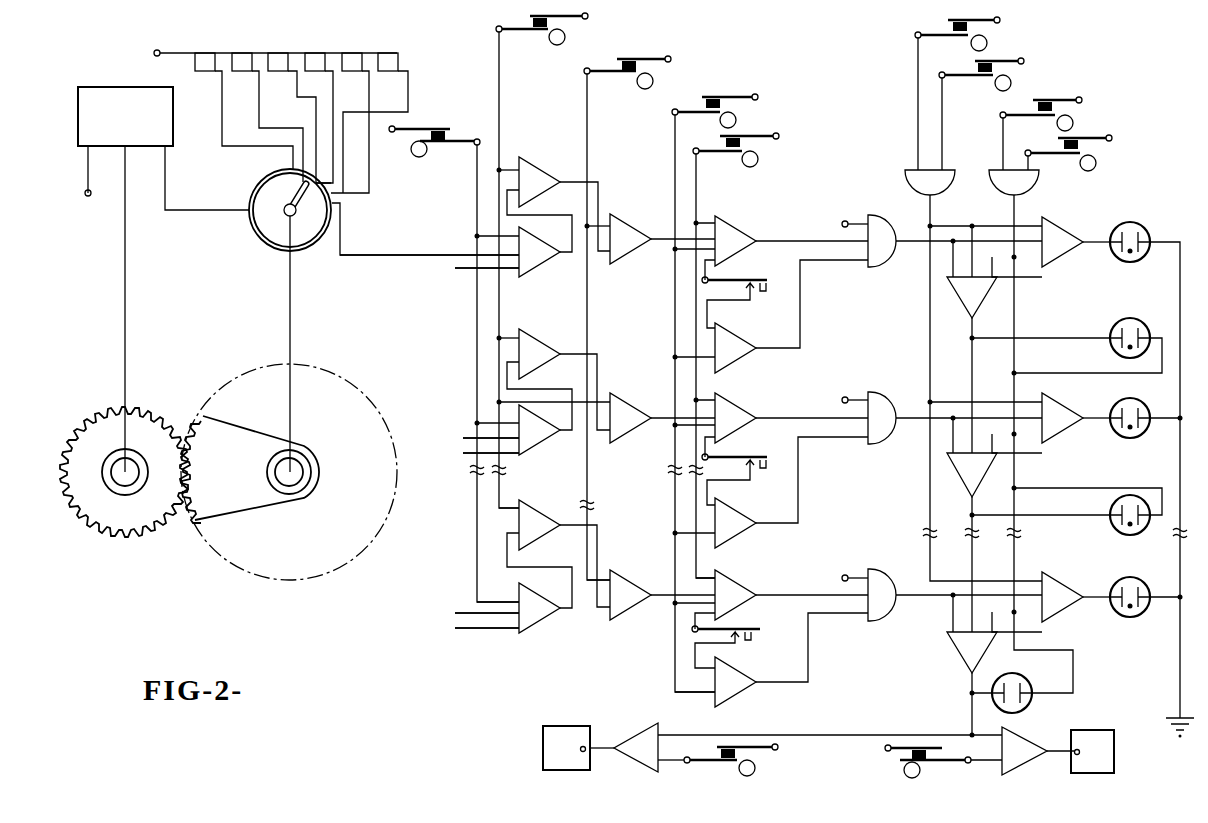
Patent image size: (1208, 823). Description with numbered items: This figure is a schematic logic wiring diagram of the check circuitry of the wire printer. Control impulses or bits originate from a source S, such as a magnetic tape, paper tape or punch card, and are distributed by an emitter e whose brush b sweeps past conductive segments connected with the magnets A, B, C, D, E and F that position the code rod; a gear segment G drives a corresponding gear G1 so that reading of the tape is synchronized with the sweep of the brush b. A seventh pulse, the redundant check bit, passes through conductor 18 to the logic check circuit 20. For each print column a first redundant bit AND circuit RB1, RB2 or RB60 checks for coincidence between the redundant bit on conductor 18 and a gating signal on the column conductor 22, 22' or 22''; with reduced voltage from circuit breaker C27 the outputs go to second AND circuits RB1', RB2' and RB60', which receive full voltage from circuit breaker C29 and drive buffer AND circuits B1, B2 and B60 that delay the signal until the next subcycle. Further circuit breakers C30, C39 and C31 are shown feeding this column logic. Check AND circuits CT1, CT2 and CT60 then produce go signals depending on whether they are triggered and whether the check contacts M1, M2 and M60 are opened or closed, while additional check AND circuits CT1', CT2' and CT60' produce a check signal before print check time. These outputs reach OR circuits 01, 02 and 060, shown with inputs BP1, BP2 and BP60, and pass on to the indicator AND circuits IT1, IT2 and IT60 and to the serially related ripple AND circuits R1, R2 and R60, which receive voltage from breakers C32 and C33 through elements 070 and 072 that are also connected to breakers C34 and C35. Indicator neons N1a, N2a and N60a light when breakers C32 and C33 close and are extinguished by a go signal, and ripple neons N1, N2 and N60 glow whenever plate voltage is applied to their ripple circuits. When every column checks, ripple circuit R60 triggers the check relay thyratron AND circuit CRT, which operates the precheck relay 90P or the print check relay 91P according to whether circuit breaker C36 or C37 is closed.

The magnet A is at (244, 100).
The magnet B is at (267, 107).
The magnet C is at (299, 107).
The magnet D is at (319, 107).
The magnet E is at (350, 112).
The magnet F is at (375, 112).
The source S is at (173, 117).
The emitter brush b is at (293, 191).
The emitter e is at (251, 226).
The conductor 18 is at (362, 253).
The gear G1 is at (136, 515).
The gear segment G is at (299, 540).
The circuit breaker C27 is at (427, 151).
The circuit breaker C29 is at (565, 36).
The cam switch C30 is at (653, 80).
The cam switch C39 is at (736, 119).
The cam switch C31 is at (758, 158).
The circuit breaker C32 is at (987, 42).
The circuit breaker C33 is at (1011, 82).
The cam switch C34 is at (1073, 122).
The cam switch C35 is at (1096, 163).
The circuit breaker C36 is at (755, 770).
The circuit breaker C37 is at (904, 770).
The second AND circuit RB1' is at (554, 194).
The first redundant bit AND circuit RB1 is at (514, 257).
The conductor 22 is at (482, 281).
The second AND circuit RB2' is at (554, 371).
The first redundant bit AND circuit RB2 is at (518, 435).
The input lines 22' is at (475, 454).
The second AND circuit RB60' is at (554, 547).
The first redundant bit AND circuit RB60 is at (519, 614).
The input lines 22'' is at (486, 631).
The buffer AND circuit B1 is at (625, 230).
The buffer AND circuit B2 is at (625, 409).
The buffer AND circuit B60 is at (625, 586).
The check AND circuit CT1 is at (771, 236).
The check contacts M1 is at (734, 294).
The additional check AND circuit CT1' is at (771, 316).
The check AND circuit CT2 is at (771, 414).
The check contacts M2 is at (734, 471).
The additional check AND circuit CT2' is at (771, 493).
The check AND circuit CT60 is at (771, 592).
The check contacts M60 is at (729, 640).
The additional check AND circuit CT60' is at (771, 661).
The OR circuit 01 is at (951, 230).
The blocking pulse input BP1 is at (846, 220).
The OR circuit 02 is at (952, 407).
The blocking pulse input BP2 is at (846, 396).
The OR circuit 060 is at (953, 583).
The blocking pulse input BP60 is at (846, 574).
The OR gate 070 is at (908, 177).
The OR gate 072 is at (1036, 182).
The logic check circuit 20 is at (843, 126).
The ripple AND circuit R1 is at (960, 298).
The ripple AND circuit R2 is at (960, 478).
The ripple AND circuit R60 is at (960, 654).
The indicator AND circuit IT1 is at (1062, 234).
The indicator AND circuit IT2 is at (1062, 410).
The indicator AND circuit IT60 is at (1074, 577).
The ripple neon light N1 is at (1140, 226).
The neon indicator light N1a is at (1116, 326).
The ripple neon light N2 is at (1150, 396).
The neon indicator light N2a is at (1116, 532).
The ripple neon light N60 is at (1150, 575).
The neon indicator light N60a is at (1024, 680).
The check relay thyratron AND circuit CRT is at (635, 730).
The precheck relay 90P is at (578, 748).
The print check relay 91P is at (1092, 751).